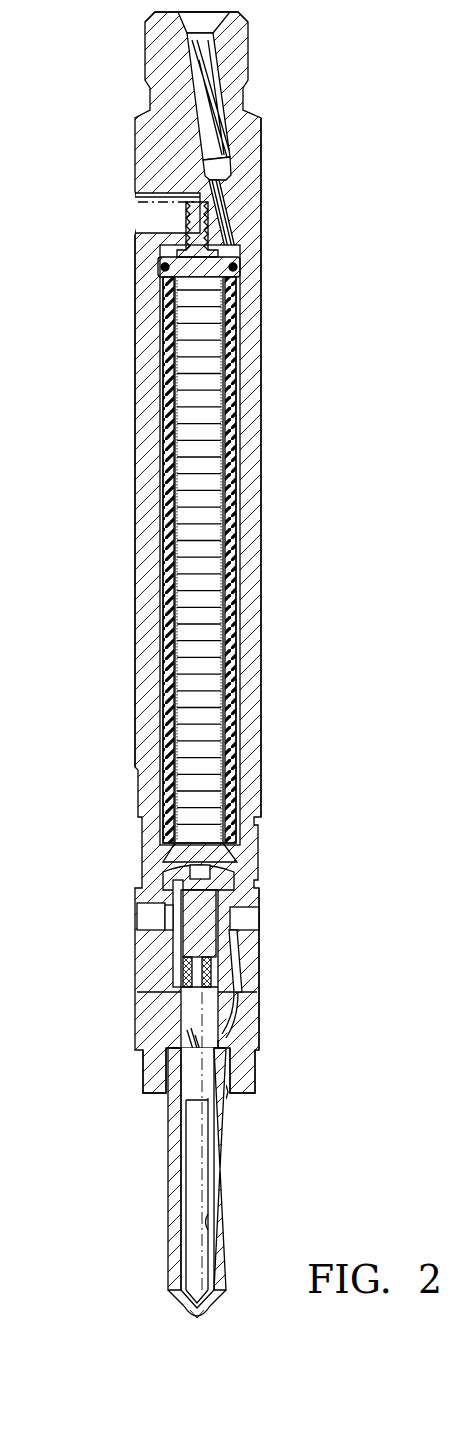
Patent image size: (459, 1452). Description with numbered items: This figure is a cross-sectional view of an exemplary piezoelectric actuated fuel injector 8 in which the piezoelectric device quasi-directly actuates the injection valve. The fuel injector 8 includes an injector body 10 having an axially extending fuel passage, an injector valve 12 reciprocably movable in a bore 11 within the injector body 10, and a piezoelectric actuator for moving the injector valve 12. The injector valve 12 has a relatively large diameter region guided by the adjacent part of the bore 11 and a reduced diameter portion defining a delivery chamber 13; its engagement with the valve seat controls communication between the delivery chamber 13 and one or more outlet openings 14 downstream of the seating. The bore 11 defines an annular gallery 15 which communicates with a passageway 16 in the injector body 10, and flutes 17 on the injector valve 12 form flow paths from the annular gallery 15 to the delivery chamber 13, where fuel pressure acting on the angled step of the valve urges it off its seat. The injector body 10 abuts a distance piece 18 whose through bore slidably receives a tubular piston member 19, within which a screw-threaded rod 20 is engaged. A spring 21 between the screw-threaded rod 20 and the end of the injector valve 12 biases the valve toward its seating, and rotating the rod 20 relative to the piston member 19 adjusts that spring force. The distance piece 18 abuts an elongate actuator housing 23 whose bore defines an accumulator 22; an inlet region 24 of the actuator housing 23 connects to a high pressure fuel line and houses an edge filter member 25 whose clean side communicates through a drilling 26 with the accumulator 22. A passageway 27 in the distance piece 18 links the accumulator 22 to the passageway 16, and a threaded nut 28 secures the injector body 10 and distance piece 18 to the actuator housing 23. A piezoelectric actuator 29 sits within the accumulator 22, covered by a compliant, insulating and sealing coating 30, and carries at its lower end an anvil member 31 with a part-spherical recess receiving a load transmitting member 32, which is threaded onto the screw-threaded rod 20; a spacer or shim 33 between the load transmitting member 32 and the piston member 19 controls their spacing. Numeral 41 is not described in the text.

The fuel injector 8 is at (302, 392).
The injector body 10 is at (222, 1177).
The bore 11 is at (205, 1222).
The injector valve 12 is at (192, 1168).
The delivery chamber 13 is at (187, 1128).
The outlet openings 14 is at (187, 1307).
The annular gallery 15 is at (178, 1035).
The passageway 16 is at (230, 1027).
The flutes 17 is at (202, 1073).
The distance piece 18 is at (243, 952).
The piston member 19 is at (182, 928).
The screw-threaded rod 20 is at (203, 917).
The spring 21 is at (210, 990).
The accumulator 22 is at (232, 695).
The actuator housing 23 is at (252, 647).
The inlet region 24 is at (298, 28).
The edge filter member 25 is at (210, 115).
The drilling 26 is at (225, 210).
The passageway 27 is at (232, 968).
The threaded nut 28 is at (247, 1072).
The piezoelectric actuator 29 is at (213, 787).
The coating 30 is at (227, 755).
The anvil member 31 is at (222, 860).
The load transmitting member 32 is at (220, 888).
The spacer or shim 33 is at (168, 895).
The orifice 41 is at (226, 1093).